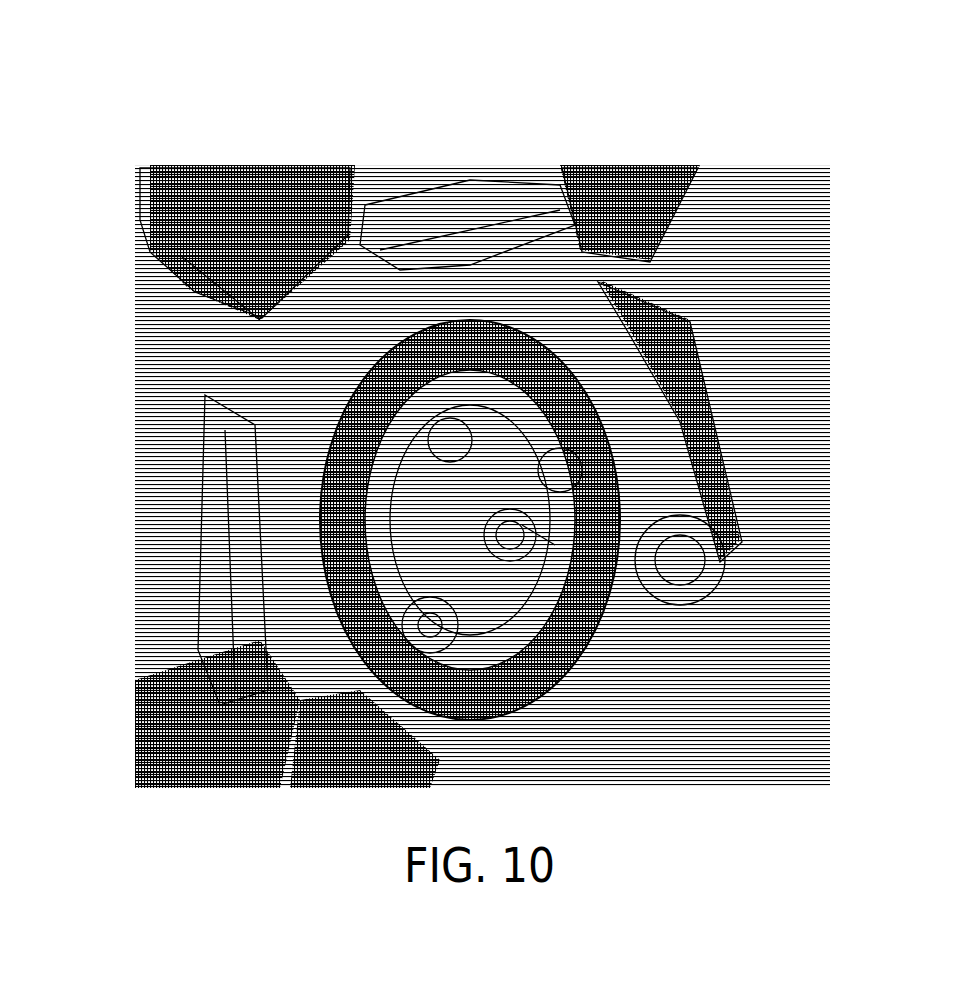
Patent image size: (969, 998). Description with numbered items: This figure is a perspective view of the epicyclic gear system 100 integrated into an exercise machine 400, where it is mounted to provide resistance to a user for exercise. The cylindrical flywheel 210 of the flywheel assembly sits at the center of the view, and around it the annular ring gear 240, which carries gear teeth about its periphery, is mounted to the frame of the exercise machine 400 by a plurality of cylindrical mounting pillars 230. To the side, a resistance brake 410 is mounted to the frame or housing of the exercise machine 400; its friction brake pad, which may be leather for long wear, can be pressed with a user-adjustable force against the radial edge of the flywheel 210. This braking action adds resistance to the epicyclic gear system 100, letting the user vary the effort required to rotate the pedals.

The epicyclic gear system 100 is at (205, 112).
The flywheel 210 is at (405, 198).
The mounting pillars 230 is at (600, 300).
The ring gear 240 is at (578, 200).
The exercise machine 400 is at (200, 250).
The resistance brake 410 is at (212, 557).